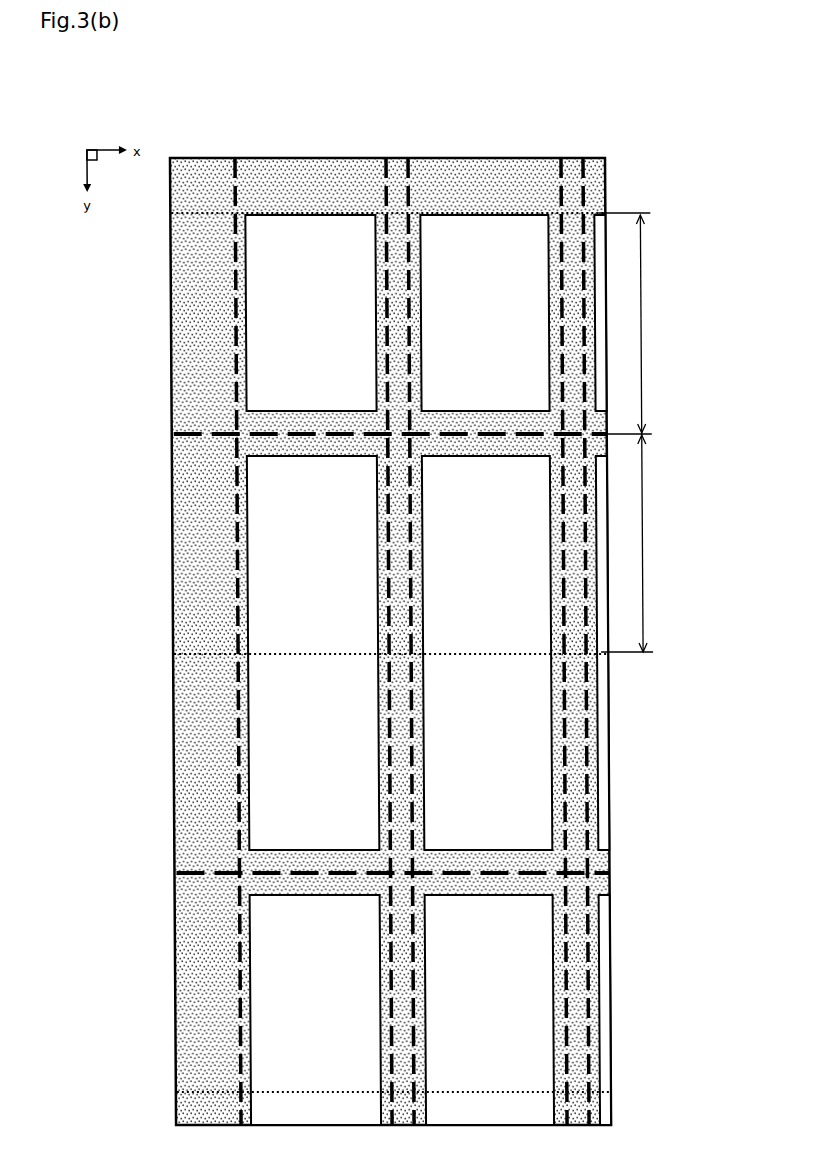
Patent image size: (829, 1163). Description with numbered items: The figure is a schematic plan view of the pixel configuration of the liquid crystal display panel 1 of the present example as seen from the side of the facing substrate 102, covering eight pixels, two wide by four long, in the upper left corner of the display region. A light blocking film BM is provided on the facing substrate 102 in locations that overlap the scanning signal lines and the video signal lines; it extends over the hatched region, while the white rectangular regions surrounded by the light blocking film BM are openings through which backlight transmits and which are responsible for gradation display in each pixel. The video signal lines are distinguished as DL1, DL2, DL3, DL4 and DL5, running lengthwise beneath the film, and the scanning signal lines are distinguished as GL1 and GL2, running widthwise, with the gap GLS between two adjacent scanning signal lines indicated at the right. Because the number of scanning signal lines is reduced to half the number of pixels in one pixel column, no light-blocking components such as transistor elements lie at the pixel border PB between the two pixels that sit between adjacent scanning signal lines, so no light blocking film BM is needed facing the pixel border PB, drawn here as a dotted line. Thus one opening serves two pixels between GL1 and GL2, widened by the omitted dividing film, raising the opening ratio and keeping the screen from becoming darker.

The liquid crystal display panel 1 is at (413, 629).
The facing substrate 102 is at (391, 629).
The light blocking film BM is at (540, 861).
The pixel border PB is at (193, 220).
The gap between two adjacent scanning signal lines GLS is at (637, 432).
The video signal line DL1 is at (238, 175).
The video signal line DL2 is at (386, 735).
The video signal line DL3 is at (412, 175).
The video signal line DL4 is at (568, 733).
The video signal line DL5 is at (588, 175).
The scanning signal line GL1 is at (197, 430).
The scanning signal line GL2 is at (197, 869).